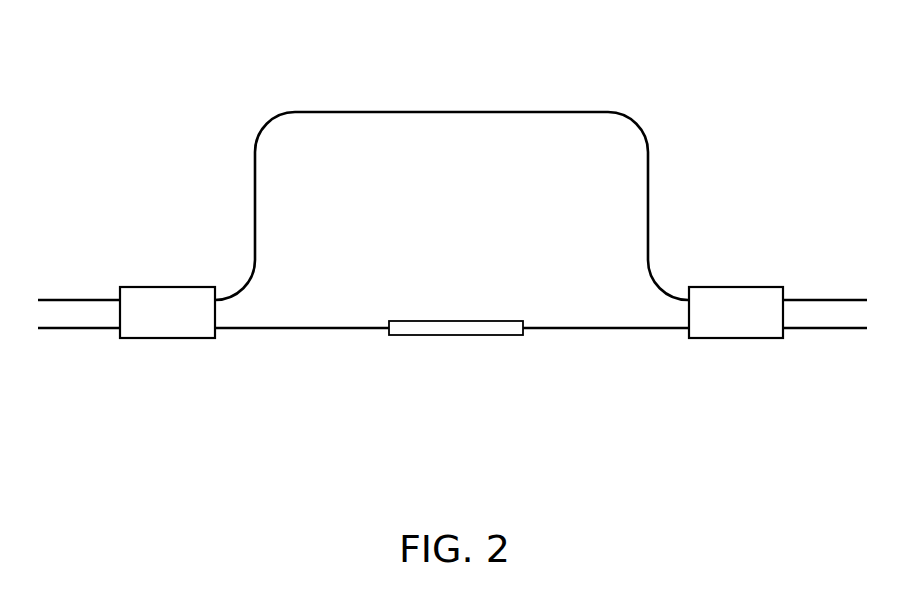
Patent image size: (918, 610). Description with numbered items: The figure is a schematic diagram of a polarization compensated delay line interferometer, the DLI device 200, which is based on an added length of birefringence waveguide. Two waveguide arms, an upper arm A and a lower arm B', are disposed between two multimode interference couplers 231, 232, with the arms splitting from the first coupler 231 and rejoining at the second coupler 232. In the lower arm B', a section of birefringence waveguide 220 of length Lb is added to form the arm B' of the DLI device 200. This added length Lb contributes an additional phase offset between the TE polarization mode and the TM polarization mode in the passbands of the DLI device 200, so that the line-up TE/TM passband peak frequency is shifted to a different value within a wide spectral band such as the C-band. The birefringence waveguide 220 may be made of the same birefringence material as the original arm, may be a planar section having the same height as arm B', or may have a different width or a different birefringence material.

The DLI device 200 is at (452, 205).
The Multimode Interference coupler 231 is at (149, 318).
The Multimode Interference coupler 232 is at (718, 318).
The birefringence waveguide 220 is at (505, 336).